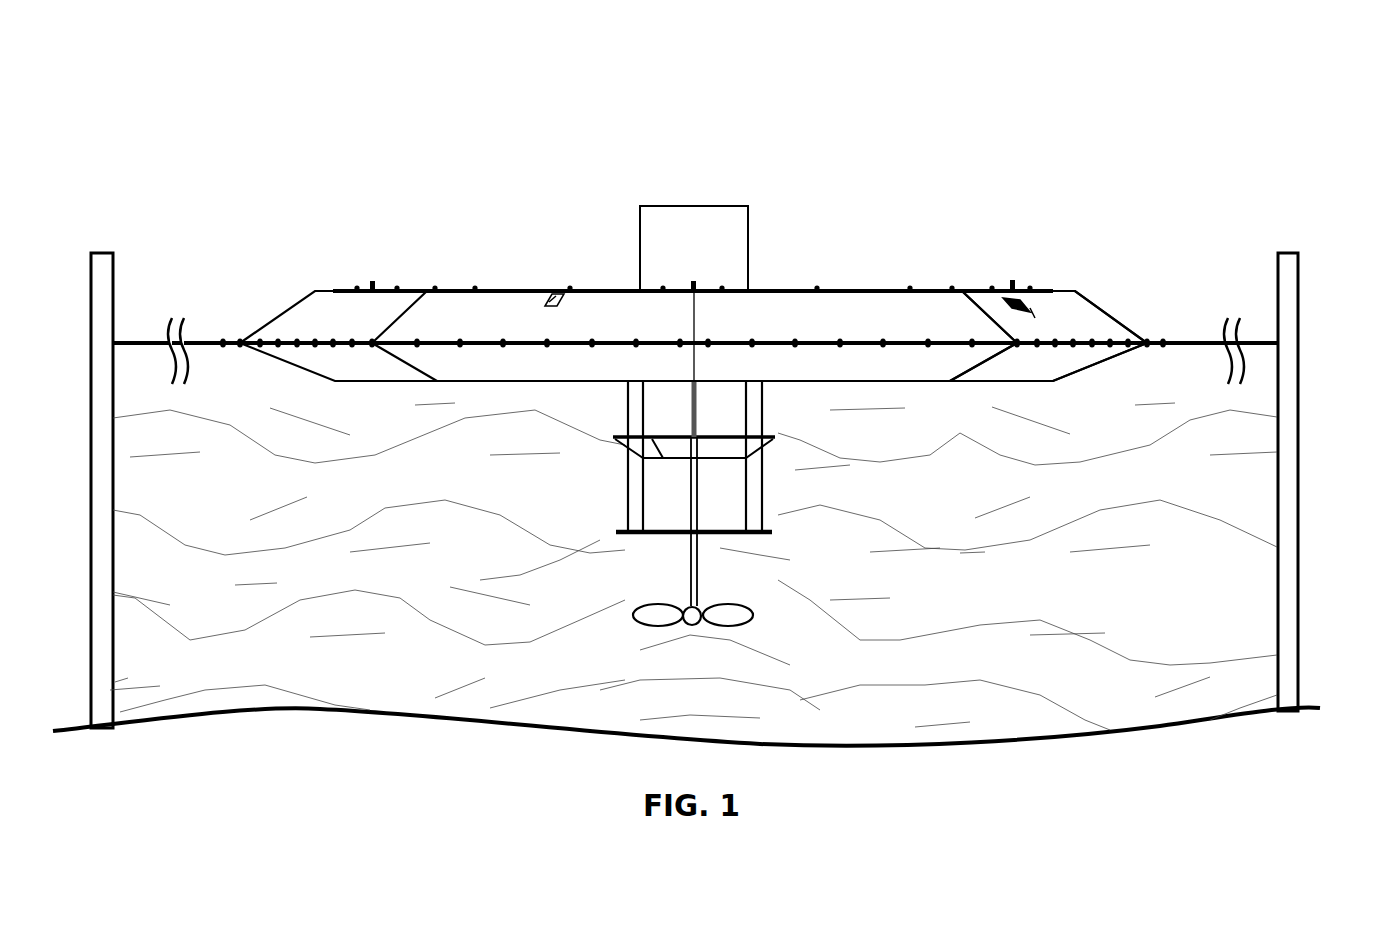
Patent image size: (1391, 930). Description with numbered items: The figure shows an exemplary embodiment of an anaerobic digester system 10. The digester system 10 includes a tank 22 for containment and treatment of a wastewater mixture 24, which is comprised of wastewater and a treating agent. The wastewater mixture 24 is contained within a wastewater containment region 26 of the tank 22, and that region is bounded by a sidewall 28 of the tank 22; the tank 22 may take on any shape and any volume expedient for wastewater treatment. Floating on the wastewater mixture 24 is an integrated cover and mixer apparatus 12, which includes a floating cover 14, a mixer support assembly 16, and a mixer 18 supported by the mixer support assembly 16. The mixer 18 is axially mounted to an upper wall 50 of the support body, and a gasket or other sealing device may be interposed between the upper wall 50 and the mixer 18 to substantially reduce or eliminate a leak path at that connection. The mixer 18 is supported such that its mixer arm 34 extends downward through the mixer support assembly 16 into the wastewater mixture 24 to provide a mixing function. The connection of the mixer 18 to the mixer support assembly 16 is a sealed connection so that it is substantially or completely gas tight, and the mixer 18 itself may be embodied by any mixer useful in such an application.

The digester system 10 is at (158, 70).
The integrated cover and mixer apparatus 12 is at (688, 264).
The floating cover 14 is at (1203, 342).
The mixer support assembly 16 is at (1067, 306).
The mixer 18 is at (640, 223).
The upper wall 50 is at (863, 291).
The tank 22 is at (709, 476).
The wastewater mixture 24 is at (1028, 566).
The wastewater containment region 26 is at (1258, 466).
The sidewall 28 is at (88, 283).
The mixer arm 34 is at (690, 568).